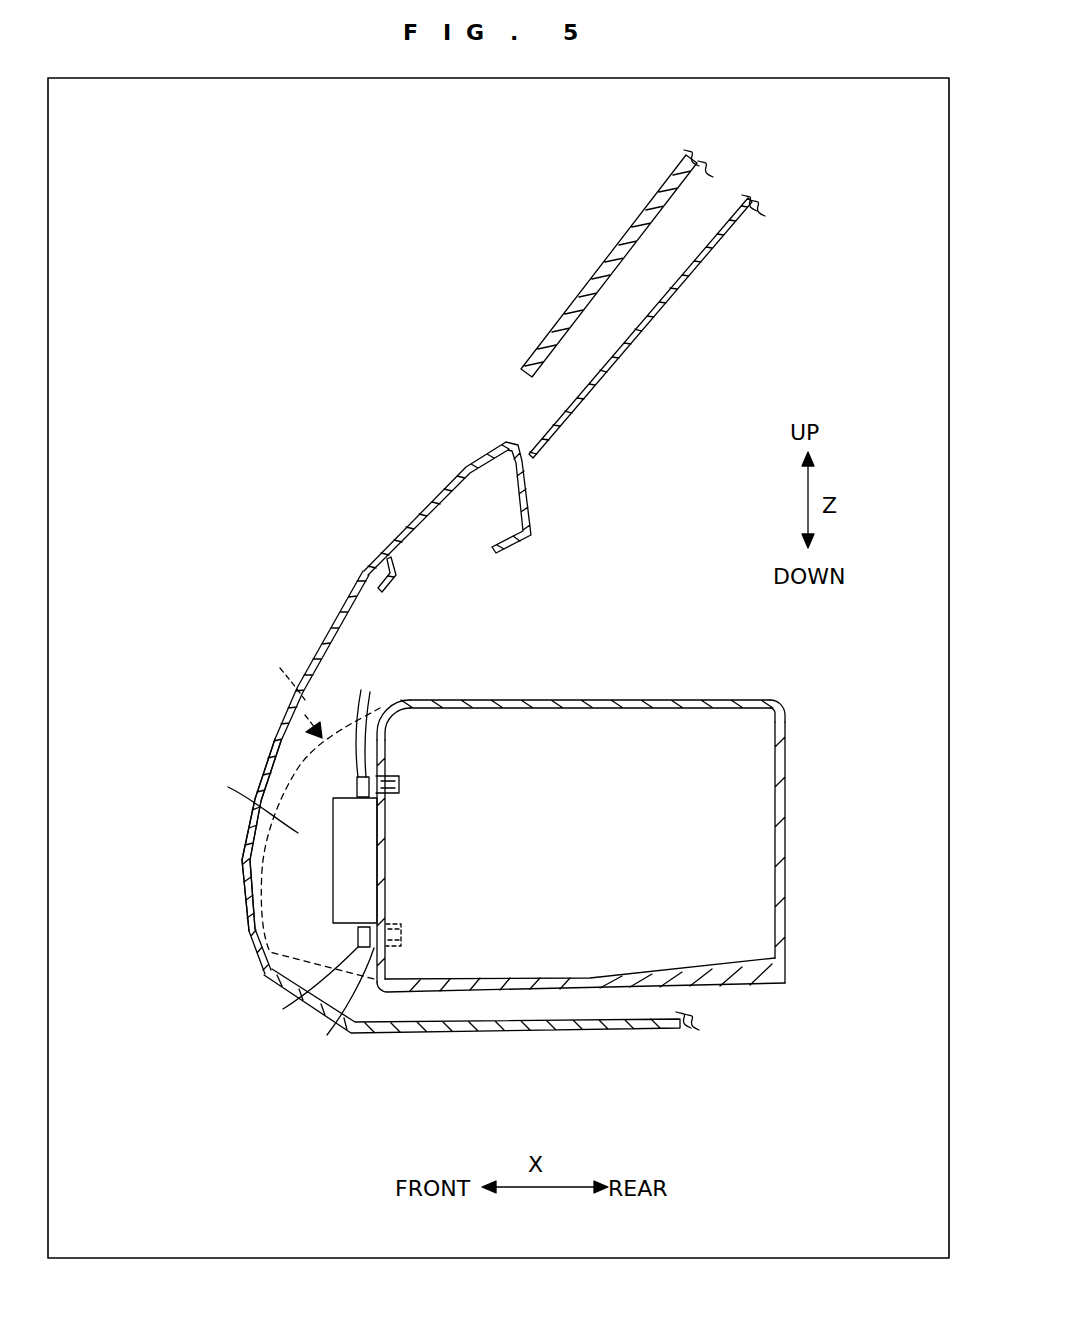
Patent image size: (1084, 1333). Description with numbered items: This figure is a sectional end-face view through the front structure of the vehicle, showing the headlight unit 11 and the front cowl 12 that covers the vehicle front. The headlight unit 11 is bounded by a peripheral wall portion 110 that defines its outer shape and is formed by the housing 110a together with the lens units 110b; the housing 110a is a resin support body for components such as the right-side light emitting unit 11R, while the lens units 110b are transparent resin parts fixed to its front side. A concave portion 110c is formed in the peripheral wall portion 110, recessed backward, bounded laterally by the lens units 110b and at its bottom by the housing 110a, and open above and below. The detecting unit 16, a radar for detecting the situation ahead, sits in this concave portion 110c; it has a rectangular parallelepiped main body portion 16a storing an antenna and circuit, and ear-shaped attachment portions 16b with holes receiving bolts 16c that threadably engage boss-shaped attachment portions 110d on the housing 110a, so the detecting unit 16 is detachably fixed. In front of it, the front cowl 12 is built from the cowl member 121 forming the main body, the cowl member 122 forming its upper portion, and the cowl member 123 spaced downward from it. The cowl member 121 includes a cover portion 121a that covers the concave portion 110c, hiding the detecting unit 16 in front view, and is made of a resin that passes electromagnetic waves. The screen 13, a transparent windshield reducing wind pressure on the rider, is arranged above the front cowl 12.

The headlight unit 11 is at (523, 882).
The right-side light emitting unit 11R is at (274, 691).
The front cowl 12 is at (451, 647).
The screen 13 is at (631, 222).
The detecting unit 16 is at (282, 866).
The main body portion 16a is at (333, 881).
The attachment portion 16b is at (375, 775).
The bolt 16c is at (357, 755).
The peripheral wall portion 110 is at (631, 816).
The housing 110a is at (570, 702).
The lens unit 110b is at (288, 792).
The concave portion 110c is at (230, 801).
The attachment portion 110d is at (398, 786).
The cowl member 121 is at (326, 635).
The cover portion 121a is at (243, 856).
The cowl member 122 is at (470, 482).
The cowl member 123 is at (446, 1030).